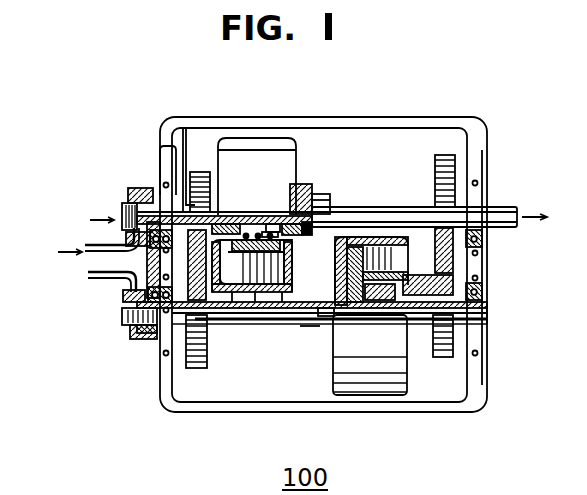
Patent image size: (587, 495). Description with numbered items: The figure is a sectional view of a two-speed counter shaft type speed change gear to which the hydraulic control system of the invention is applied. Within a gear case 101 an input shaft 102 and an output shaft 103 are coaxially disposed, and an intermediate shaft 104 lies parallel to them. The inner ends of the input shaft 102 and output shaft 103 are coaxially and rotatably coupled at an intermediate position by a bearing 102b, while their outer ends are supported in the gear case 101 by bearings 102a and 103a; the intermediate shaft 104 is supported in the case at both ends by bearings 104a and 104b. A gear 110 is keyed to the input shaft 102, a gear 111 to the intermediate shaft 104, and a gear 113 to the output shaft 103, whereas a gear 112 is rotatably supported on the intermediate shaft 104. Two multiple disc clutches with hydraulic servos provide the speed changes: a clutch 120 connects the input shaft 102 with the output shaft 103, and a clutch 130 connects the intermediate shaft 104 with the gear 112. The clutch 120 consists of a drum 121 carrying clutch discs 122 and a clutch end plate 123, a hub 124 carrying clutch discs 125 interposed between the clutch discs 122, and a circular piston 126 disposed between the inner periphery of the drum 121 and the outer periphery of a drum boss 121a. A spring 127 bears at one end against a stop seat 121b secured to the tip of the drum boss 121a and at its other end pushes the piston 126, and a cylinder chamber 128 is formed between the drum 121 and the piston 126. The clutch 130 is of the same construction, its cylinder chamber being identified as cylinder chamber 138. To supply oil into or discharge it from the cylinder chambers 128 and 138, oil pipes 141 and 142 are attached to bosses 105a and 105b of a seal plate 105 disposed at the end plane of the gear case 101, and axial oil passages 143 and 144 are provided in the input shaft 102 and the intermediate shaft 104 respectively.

The gear case 101 is at (322, 410).
The input shaft 102 is at (122, 212).
The bearing 102a is at (162, 210).
The bearing 102b is at (321, 200).
The output shaft 103 is at (496, 208).
The bearing 103a is at (483, 241).
The intermediate shaft 104 is at (122, 316).
The bearing 104a is at (150, 340).
The bearing 104b is at (483, 290).
The seal plate 105 is at (126, 295).
The boss 105a is at (126, 238).
The boss 105b is at (137, 330).
The gear 110 is at (208, 160).
The gear 111 is at (200, 368).
The gear 112 is at (447, 358).
The gear 113 is at (440, 156).
The multiple disc clutch 120 is at (282, 137).
The drum 121 is at (240, 288).
The drum boss 121a is at (272, 226).
The stop seat 121b is at (314, 196).
The clutch discs 122 is at (255, 290).
The clutch end plate 123 is at (284, 292).
The hub 124 is at (283, 250).
The clutch discs 125 is at (297, 283).
The circular piston 126 is at (270, 235).
The spring 127 is at (292, 200).
The cylinder chamber 128 is at (280, 243).
The multiple disc clutch 130 is at (386, 396).
The cylinder chamber 138 is at (328, 312).
The oil pipe 141 is at (86, 258).
The oil pipe 142 is at (92, 276).
The axial oil passage 143 is at (164, 180).
The axial oil passage 144 is at (308, 326).